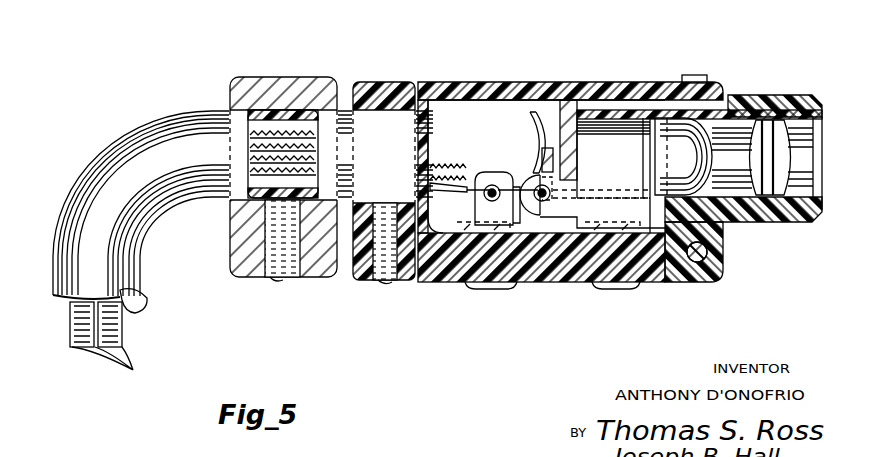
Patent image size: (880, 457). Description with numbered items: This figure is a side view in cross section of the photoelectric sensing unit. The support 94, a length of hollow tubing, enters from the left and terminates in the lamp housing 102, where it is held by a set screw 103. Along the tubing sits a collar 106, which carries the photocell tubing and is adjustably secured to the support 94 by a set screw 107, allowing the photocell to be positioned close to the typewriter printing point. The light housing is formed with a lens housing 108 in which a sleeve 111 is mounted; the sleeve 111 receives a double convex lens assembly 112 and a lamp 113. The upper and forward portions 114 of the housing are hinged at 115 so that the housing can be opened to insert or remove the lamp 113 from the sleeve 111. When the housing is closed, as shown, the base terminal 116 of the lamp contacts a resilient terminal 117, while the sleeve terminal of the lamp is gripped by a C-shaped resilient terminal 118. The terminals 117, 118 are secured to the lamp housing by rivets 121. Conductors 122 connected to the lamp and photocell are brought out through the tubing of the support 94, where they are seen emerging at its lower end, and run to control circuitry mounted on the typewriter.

The support 94 is at (140, 158).
The lamp housing 102 is at (400, 92).
The set screw 103 is at (388, 285).
The collar 106 is at (300, 80).
The set screw 107 is at (274, 283).
The lens housing 108 is at (782, 97).
The sleeve 111 is at (752, 118).
The double convex lens assembly 112 is at (764, 222).
The lamp 113 is at (672, 128).
The upper and forward portions of the housing 114 is at (505, 90).
The hinge 115 is at (697, 283).
The base terminal of the lamp 116 is at (530, 115).
The resilient terminal 117 is at (534, 128).
The C-shaped resilient terminal 118 is at (608, 137).
The rivets 121 is at (497, 288).
The conductors 122 is at (118, 340).